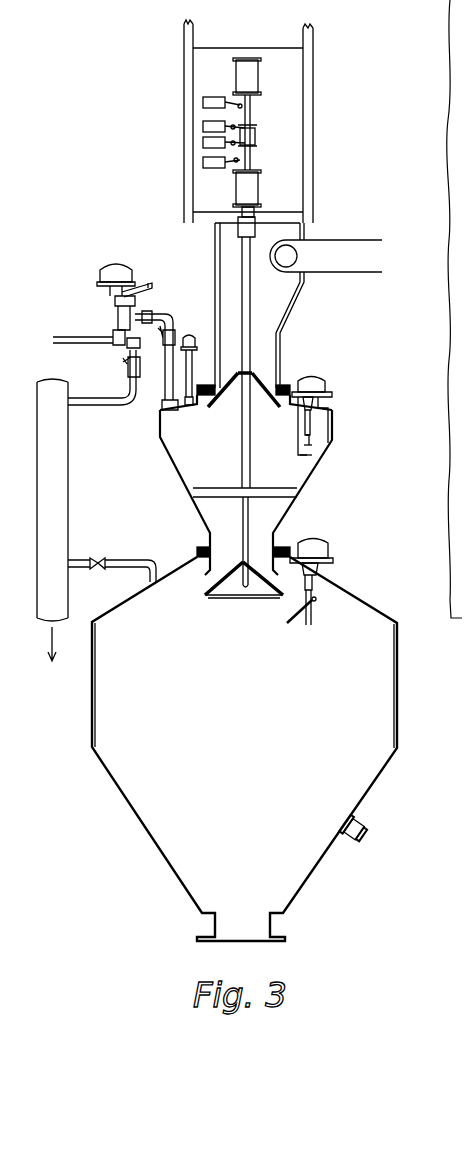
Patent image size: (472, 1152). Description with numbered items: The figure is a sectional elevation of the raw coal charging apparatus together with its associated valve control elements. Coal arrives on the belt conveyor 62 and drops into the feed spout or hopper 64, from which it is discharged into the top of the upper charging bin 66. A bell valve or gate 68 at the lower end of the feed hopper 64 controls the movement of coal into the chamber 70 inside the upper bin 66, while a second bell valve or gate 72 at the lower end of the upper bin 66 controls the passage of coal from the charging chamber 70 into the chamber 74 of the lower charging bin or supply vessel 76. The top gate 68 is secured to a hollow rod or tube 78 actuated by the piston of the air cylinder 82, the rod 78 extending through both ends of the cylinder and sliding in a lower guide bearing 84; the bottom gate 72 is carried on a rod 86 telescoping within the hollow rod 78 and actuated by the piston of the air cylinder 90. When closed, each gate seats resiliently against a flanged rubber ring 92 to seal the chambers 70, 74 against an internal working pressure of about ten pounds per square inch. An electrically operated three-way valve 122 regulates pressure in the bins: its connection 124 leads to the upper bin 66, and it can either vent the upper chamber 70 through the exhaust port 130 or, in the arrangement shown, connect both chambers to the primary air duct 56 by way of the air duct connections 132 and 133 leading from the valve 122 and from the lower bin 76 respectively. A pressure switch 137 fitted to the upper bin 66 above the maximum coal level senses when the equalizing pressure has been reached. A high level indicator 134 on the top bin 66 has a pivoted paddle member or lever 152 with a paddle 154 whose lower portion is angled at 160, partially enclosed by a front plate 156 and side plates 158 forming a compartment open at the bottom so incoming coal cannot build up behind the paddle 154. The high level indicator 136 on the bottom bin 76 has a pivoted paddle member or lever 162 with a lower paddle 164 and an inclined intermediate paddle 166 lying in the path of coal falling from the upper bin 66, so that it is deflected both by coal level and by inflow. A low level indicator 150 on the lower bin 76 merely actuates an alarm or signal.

The primary air duct 56 is at (68, 488).
The belt conveyor 62 is at (338, 241).
The feed spout or hopper 64 is at (215, 258).
The upper charging bin 66 is at (305, 480).
The bell valve or gate 68 is at (258, 378).
The chamber 70 is at (233, 452).
The bell valve or gate 72 is at (252, 565).
The chamber 74 is at (250, 722).
The lower charging bin 76 is at (398, 692).
The hollow rod or tube 78 is at (251, 302).
The air cylinder 82 is at (260, 188).
The lower guide bearing 84 is at (210, 488).
The rod 86 is at (242, 524).
The air cylinder 90 is at (262, 77).
The flanged rubber ring 92 is at (208, 407).
The three-way valve 122 is at (116, 324).
The connection 124 is at (166, 366).
The exhaust port 130 is at (60, 350).
The air duct connection 132 is at (105, 398).
The air duct connection 133 is at (104, 559).
The high level indicator 134 is at (327, 385).
The high level indicator 136 is at (326, 542).
The pressure switch 137 is at (188, 333).
The low level indicator 150 is at (368, 822).
The pivoted paddle member or lever 152 is at (312, 430).
The paddle 154 is at (312, 443).
The front plate 156 is at (298, 427).
The side plates 158 is at (310, 458).
The angled lower portion of paddle 160 is at (295, 461).
The pivoted paddle member or lever 162 is at (312, 590).
The paddle 164 is at (309, 628).
The paddle 166 is at (290, 620).